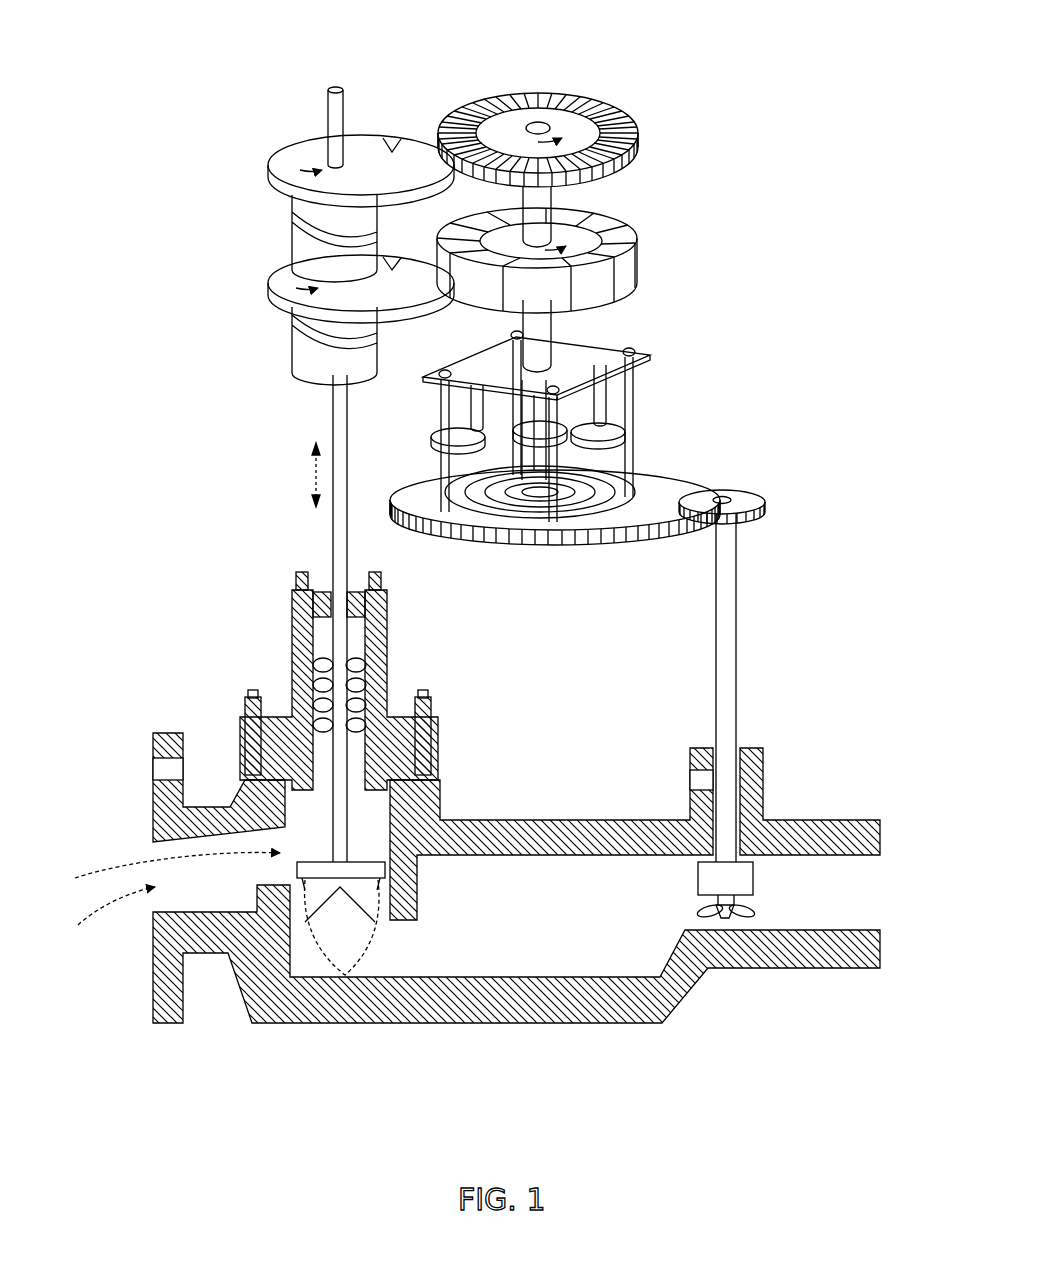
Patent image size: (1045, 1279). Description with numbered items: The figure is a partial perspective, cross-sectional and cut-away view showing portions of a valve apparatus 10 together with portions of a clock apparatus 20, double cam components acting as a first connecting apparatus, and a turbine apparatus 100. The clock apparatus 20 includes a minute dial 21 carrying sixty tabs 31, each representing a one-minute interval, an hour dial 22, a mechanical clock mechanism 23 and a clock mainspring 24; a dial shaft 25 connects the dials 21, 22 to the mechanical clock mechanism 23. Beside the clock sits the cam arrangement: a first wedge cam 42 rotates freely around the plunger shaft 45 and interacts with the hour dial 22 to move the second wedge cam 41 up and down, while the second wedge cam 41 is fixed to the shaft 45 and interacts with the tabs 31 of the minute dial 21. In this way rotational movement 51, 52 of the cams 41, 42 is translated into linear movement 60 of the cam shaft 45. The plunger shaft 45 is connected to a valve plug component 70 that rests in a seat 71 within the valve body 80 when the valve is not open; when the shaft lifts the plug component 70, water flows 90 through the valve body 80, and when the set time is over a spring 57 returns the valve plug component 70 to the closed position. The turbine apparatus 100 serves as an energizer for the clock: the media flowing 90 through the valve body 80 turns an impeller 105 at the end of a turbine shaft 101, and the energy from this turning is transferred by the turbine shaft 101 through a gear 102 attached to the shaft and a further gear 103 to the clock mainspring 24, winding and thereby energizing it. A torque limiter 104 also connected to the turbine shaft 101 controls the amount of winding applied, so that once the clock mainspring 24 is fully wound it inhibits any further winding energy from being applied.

The valve apparatus 10 is at (805, 86).
The clock apparatus 20 is at (728, 103).
The minute dial 21 is at (600, 102).
The hour dial 22 is at (640, 282).
The mechanical clock mechanism 23 is at (652, 348).
The clock mainspring 24 is at (440, 488).
The dial shaft 25 is at (558, 195).
The tabs 31 is at (638, 142).
The second wedge cam 41 is at (292, 138).
The first wedge cam 42 is at (288, 268).
The plunger shaft 45 is at (331, 88).
The rotational movement 51 is at (296, 196).
The rotational movement 52 is at (296, 312).
The spring 57 is at (388, 680).
The linear movement 60 is at (312, 478).
The valve plug component 70 is at (164, 872).
The seat 71 is at (347, 975).
The valve body 80 is at (152, 742).
The water flow 90 is at (101, 914).
The turbine apparatus 100 is at (850, 577).
The turbine shaft 101 is at (738, 622).
The gear 102 is at (770, 492).
The gear 103 is at (540, 540).
The torque limiter 104 is at (756, 872).
The impeller 105 is at (735, 918).